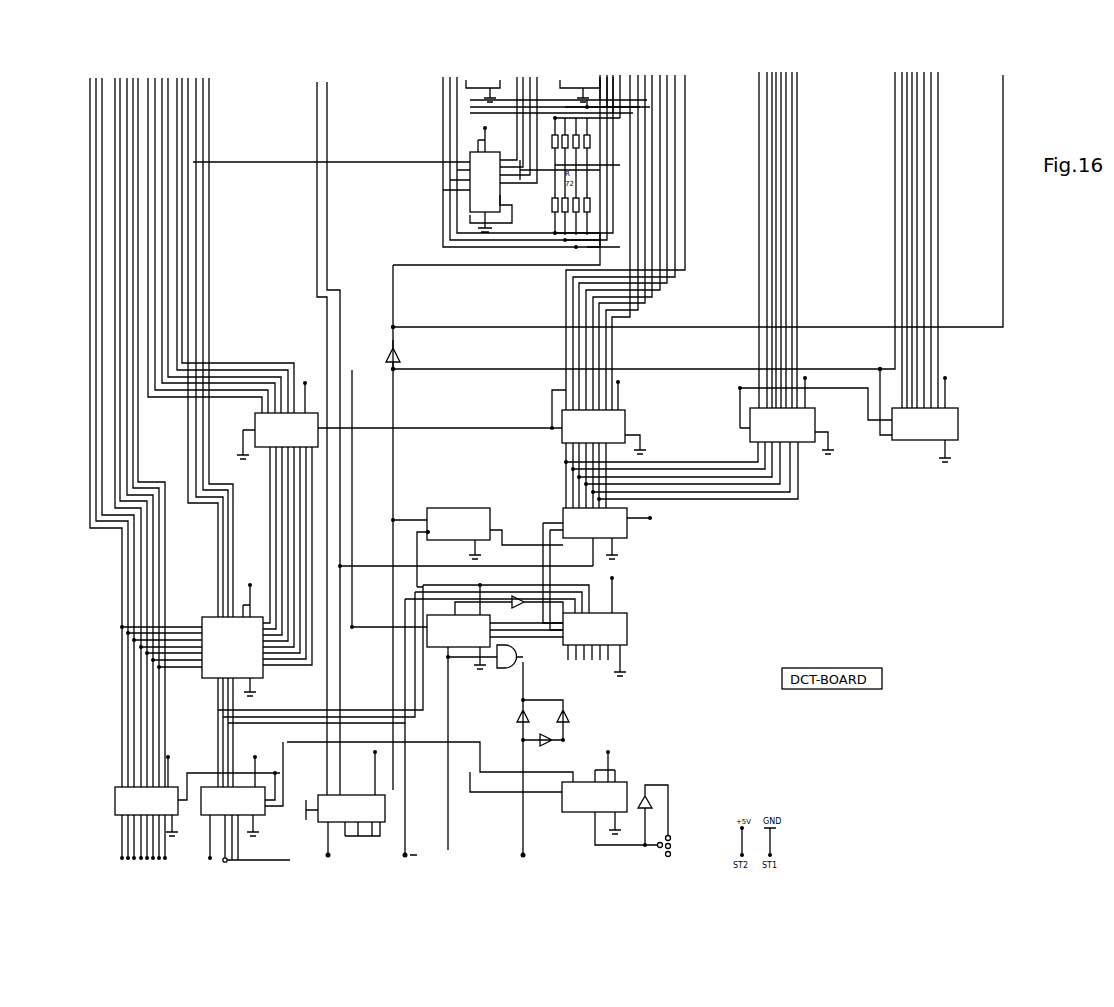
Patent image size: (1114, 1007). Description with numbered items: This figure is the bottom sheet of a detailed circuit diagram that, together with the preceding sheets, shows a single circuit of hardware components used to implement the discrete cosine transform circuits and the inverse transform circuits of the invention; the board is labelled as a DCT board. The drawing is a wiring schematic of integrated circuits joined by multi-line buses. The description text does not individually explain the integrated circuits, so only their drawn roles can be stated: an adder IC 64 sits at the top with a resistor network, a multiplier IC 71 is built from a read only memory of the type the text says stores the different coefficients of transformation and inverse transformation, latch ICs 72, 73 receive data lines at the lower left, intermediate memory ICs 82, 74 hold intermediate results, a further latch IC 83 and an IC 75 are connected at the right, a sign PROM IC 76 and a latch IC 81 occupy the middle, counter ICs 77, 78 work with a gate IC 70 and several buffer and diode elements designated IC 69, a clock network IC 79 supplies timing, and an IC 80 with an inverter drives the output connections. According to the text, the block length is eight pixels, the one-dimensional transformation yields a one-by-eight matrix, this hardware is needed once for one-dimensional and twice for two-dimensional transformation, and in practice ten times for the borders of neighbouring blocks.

The adder IC 64 is at (474, 156).
The buffer/diode IC 69 is at (550, 605).
The gate IC 70 is at (524, 656).
The multiplier IC 71 is at (100, 686).
The latch IC 72 is at (186, 804).
The latch IC 73 is at (236, 802).
The intermediate memory IC 74 is at (562, 432).
The priority encoder IC 75 is at (945, 415).
The sign PROM 76 is at (652, 545).
The counter IC 77 is at (403, 713).
The counter IC 78 is at (555, 678).
The clock network IC 79 is at (458, 850).
The encoder IC 80 is at (592, 788).
The latch IC 81 is at (490, 539).
The intermediate memory IC 82 is at (290, 340).
The latch IC 83 is at (801, 411).